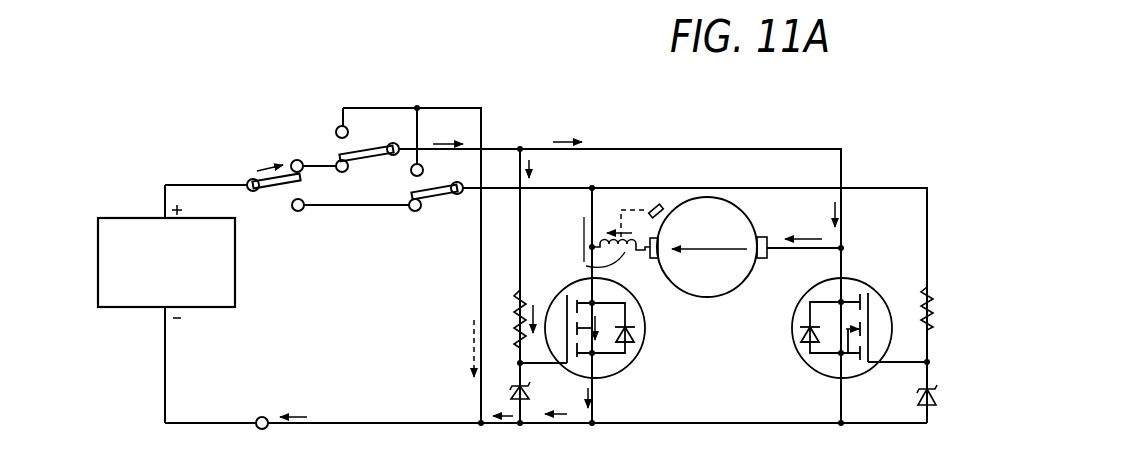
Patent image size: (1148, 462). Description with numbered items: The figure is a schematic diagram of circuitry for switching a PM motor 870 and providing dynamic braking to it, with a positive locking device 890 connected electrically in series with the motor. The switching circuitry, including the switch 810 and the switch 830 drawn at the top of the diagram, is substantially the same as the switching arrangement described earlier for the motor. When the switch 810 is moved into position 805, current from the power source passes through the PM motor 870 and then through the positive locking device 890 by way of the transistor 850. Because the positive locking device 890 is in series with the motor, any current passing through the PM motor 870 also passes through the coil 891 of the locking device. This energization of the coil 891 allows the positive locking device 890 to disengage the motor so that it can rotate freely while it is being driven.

The switch position 805 is at (297, 160).
The switch 810 is at (253, 192).
The reversing switch 830 is at (394, 143).
The transistor 850 is at (623, 370).
The PM motor 870 is at (692, 298).
The positive locking device 890 is at (632, 198).
The coil 891 is at (585, 262).